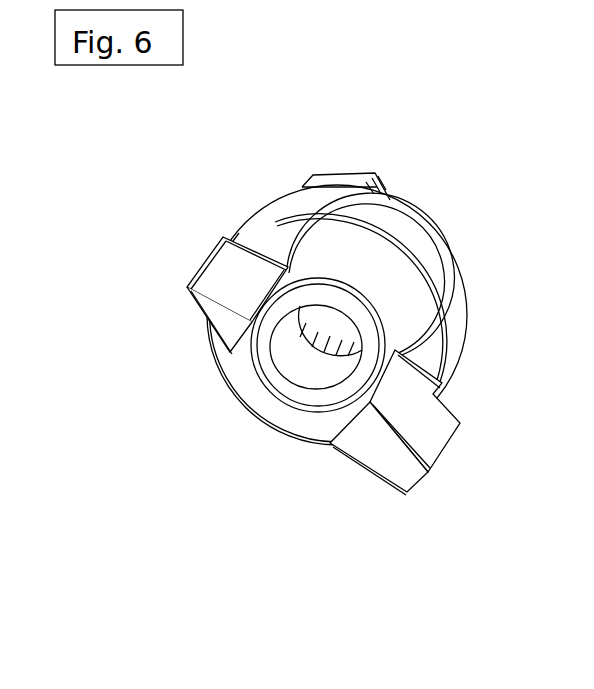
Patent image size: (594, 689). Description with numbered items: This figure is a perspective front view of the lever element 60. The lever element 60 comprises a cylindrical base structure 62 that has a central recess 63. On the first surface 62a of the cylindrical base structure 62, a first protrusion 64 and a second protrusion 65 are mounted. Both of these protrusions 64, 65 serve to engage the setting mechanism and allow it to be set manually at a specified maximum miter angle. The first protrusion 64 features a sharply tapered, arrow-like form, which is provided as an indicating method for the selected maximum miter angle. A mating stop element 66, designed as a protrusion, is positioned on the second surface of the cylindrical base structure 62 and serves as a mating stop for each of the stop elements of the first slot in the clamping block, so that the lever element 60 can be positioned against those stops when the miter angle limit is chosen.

The lever element 60 is at (407, 240).
The cylindrical base structure 62 is at (241, 392).
The first surface 62a is at (413, 333).
The central recess 63 is at (318, 372).
The first protrusion 64 is at (213, 313).
The second protrusion 65 is at (404, 467).
The mating stop element 66 is at (356, 178).